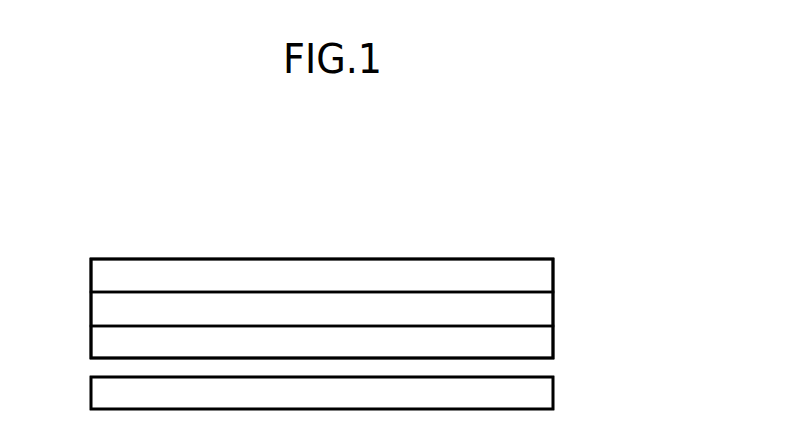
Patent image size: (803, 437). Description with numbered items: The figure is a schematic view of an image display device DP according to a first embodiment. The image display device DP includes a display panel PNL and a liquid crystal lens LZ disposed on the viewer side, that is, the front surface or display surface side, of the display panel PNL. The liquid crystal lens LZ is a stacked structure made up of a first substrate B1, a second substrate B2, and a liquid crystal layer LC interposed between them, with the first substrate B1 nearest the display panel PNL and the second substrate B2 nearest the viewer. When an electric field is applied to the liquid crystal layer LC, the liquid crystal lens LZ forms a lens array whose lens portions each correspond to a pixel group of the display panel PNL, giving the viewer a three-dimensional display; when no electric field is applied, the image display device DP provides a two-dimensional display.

The image display device DP is at (131, 199).
The liquid crystal lens LZ is at (643, 262).
The second substrate B2 is at (542, 272).
The liquid crystal layer LC is at (542, 305).
The first substrate B1 is at (542, 339).
The display panel PNL is at (542, 389).